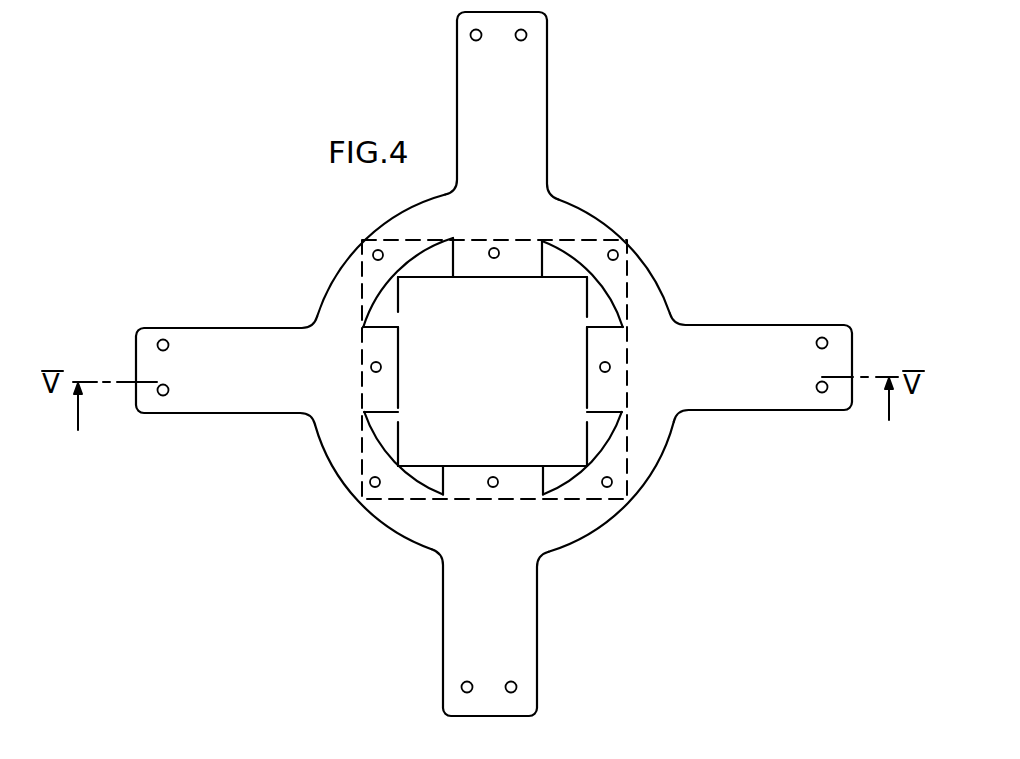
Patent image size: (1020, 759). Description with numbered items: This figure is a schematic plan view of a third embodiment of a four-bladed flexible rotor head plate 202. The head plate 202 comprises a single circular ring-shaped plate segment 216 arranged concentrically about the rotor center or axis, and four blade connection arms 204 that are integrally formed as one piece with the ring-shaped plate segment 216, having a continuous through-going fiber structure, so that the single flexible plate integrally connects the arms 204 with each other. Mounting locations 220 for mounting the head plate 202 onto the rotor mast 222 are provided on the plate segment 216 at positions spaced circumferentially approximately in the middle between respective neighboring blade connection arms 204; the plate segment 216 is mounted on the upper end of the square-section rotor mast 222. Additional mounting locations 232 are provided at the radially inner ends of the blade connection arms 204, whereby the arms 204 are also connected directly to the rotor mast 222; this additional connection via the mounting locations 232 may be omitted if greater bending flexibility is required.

The flexible rotor head plate 202 is at (494, 364).
The blade connection arms 204 is at (533, 117).
The ring-shaped plate segment 216 is at (635, 460).
The mounting locations 220 is at (618, 255).
The rotor mast 222 is at (415, 280).
The additional mounting locations 232 is at (371, 370).